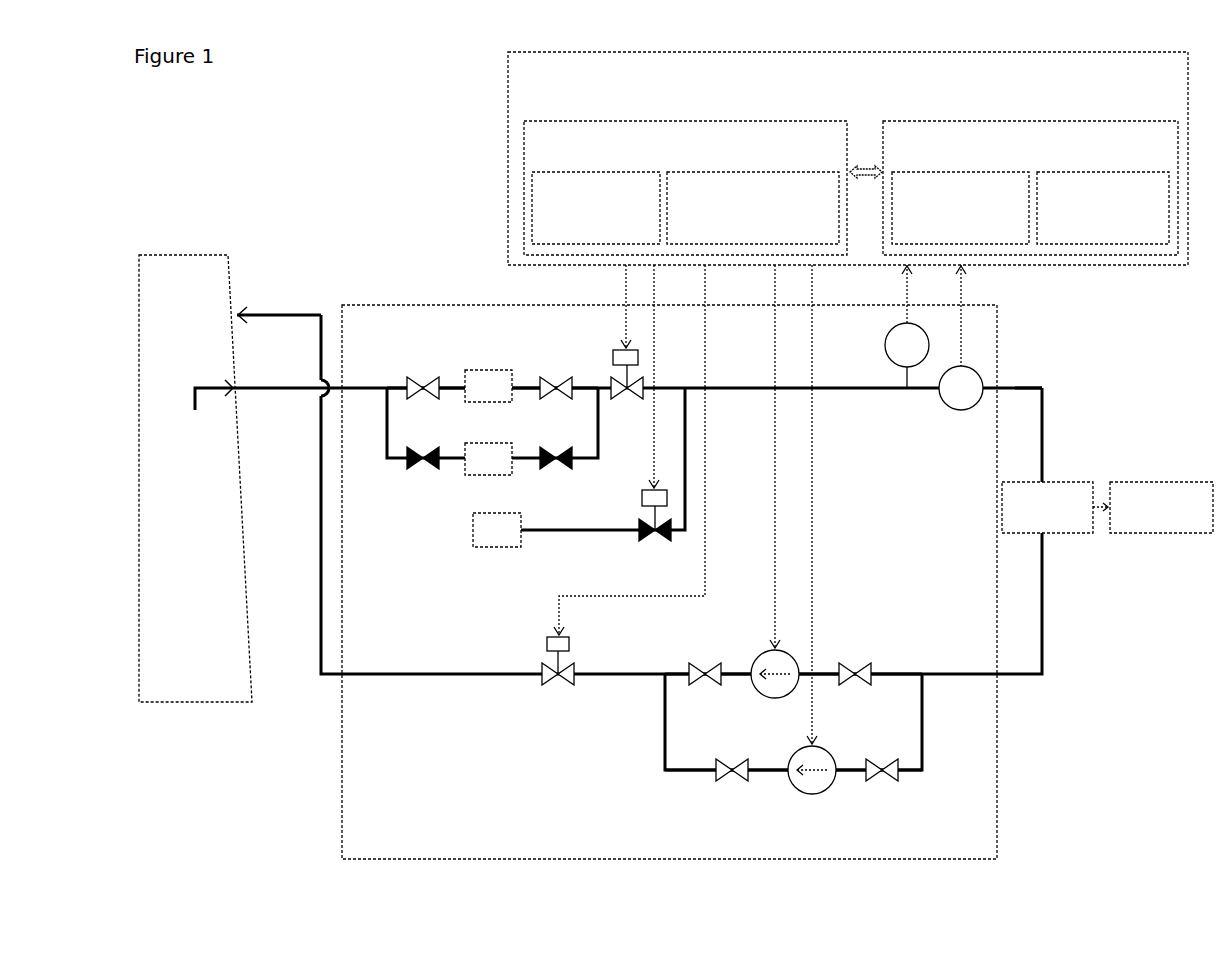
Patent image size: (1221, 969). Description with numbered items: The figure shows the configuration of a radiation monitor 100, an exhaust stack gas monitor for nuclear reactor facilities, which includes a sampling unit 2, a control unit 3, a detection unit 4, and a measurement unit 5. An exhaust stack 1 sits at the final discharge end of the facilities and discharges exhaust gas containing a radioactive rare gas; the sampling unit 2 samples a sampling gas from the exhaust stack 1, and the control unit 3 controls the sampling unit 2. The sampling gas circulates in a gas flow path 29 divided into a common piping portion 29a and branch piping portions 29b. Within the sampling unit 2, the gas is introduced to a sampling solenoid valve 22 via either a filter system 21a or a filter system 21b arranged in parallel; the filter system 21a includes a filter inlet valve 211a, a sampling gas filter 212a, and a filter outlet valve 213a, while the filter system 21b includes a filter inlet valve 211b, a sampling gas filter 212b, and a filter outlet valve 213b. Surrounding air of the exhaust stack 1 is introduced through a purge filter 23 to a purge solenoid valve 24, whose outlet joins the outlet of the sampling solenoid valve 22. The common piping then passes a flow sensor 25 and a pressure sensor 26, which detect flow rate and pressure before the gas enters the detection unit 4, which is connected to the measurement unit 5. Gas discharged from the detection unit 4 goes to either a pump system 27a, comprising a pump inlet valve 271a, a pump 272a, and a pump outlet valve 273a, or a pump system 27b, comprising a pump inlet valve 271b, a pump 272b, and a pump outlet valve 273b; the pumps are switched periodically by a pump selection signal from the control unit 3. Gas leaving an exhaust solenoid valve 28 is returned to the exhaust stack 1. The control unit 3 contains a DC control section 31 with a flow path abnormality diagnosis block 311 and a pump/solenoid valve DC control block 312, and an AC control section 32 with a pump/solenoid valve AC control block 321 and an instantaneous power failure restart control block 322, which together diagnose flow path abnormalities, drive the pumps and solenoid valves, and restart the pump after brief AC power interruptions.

The radiation monitor 100 is at (228, 143).
The exhaust stack 1 is at (189, 255).
The sampling unit 2 is at (342, 804).
The control unit 3 is at (508, 192).
The detection unit 4 is at (1055, 480).
The measurement unit 5 is at (1148, 480).
The filter system 21a is at (388, 336).
The filter system 21b is at (388, 486).
The filter inlet valve 211a is at (447, 362).
The sampling gas filter 212a is at (500, 348).
The filter outlet valve 213a is at (577, 362).
The filter inlet valve 211b is at (447, 433).
The sampling gas filter 212b is at (500, 420).
The filter outlet valve 213b is at (577, 433).
The sampling solenoid valve 22 is at (634, 400).
The purge filter 23 is at (497, 548).
The purge solenoid valve 24 is at (657, 542).
The flow sensor 25 is at (961, 410).
The pressure sensor 26 is at (885, 344).
The pump system 27a is at (652, 657).
The pump system 27b is at (652, 801).
The pump inlet valve 271a is at (855, 686).
The pump 272a is at (777, 698).
The pump outlet valve 273a is at (705, 686).
The pump inlet valve 271b is at (882, 782).
The pump 272b is at (814, 794).
The pump outlet valve 273b is at (732, 782).
The exhaust solenoid valve 28 is at (560, 686).
The gas flow path 29 is at (1026, 386).
The common piping portion 29a is at (415, 674).
The branch piping portions 29b is at (598, 462).
The DC control section 31 is at (1117, 119).
The AC control section 32 is at (800, 119).
The flow path abnormality diagnosis block 311 is at (945, 170).
The pump/solenoid valve DC control block 312 is at (1070, 170).
The pump/solenoid valve AC control block 321 is at (638, 170).
The instantaneous power failure restart control block 322 is at (775, 170).